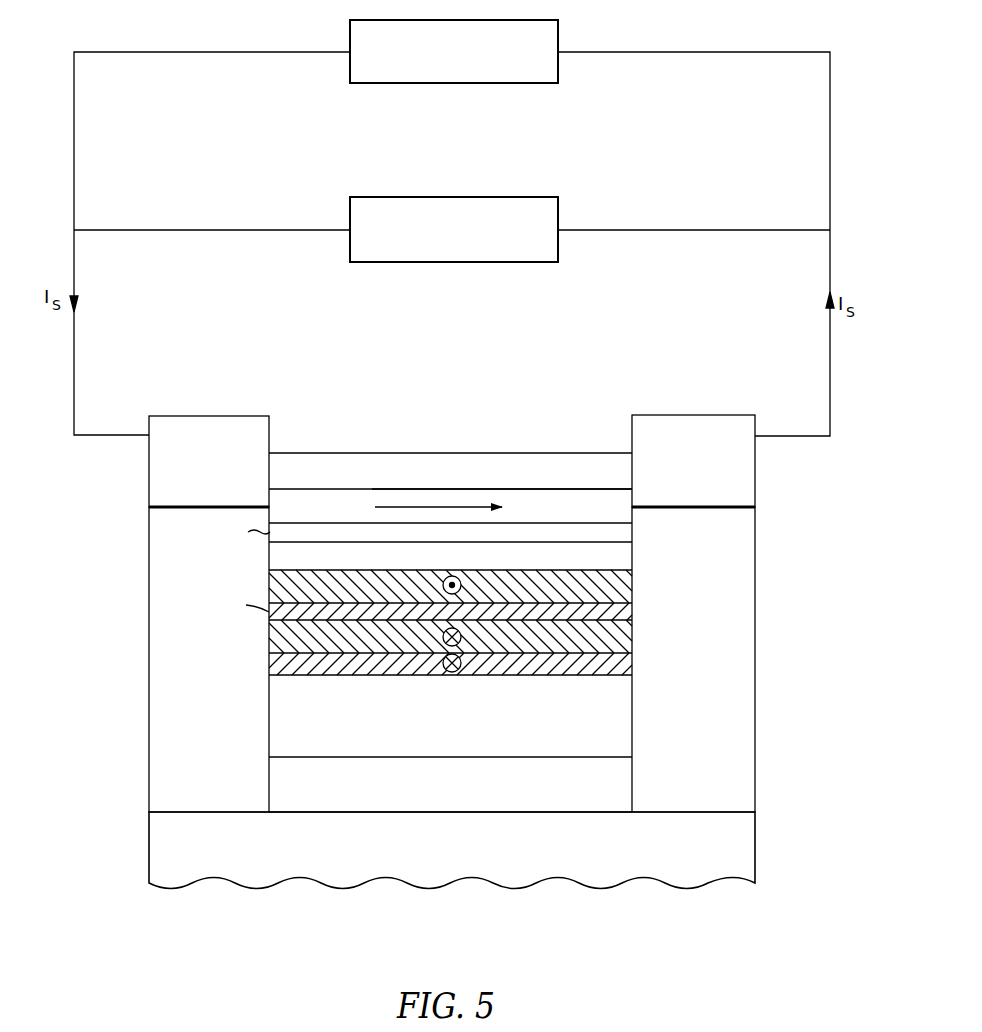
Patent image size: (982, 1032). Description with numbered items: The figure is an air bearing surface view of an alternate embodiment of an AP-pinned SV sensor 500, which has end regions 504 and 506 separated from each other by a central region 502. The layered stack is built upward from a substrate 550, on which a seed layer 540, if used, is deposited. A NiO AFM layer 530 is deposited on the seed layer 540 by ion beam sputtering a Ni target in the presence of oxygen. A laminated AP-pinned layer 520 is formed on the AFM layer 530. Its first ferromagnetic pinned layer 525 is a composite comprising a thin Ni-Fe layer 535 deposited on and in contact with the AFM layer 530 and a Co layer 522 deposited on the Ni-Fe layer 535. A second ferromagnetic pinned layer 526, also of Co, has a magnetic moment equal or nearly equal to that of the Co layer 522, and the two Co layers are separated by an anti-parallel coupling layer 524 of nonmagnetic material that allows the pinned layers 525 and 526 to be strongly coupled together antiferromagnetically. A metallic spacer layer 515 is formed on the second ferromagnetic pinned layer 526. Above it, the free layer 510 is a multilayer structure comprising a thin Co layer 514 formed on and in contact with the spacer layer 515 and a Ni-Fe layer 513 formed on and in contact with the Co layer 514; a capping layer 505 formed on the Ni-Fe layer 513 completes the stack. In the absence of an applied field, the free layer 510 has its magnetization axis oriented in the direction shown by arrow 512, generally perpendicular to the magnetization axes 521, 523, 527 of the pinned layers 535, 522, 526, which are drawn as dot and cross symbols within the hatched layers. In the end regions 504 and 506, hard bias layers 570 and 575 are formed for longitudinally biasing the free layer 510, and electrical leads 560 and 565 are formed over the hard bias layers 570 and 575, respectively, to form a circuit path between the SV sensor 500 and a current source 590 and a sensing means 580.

The AP-pinned SV sensor 500 is at (624, 940).
The central region 502 is at (630, 405).
The end region 504 is at (268, 405).
The capping layer 505 is at (626, 470).
The end region 506 is at (754, 405).
The free layer 510 is at (640, 488).
The arrow 512 is at (435, 507).
The Ni-Fe layer 513 is at (560, 498).
The Co layer 514 is at (626, 527).
The spacer layer 515 is at (626, 557).
The AP-pinned layer 520 is at (269, 570).
The magnetization axis 521 is at (460, 665).
The Co layer 522 is at (626, 638).
The magnetization axis 523 is at (445, 642).
The anti-parallel coupling layer 524 is at (626, 612).
The first ferromagnetic pinned layer 525 is at (269, 620).
The second ferromagnetic pinned layer 526 is at (626, 583).
The magnetization axis 527 is at (452, 576).
The AFM layer 530 is at (626, 732).
The Ni-Fe layer 535 is at (626, 665).
The seed layer 540 is at (626, 790).
The substrate 550 is at (750, 866).
The electrical lead 560 is at (152, 470).
The electrical lead 565 is at (750, 463).
The hard bias layer 570 is at (152, 775).
The hard bias layer 575 is at (750, 772).
The sensing means 580 is at (546, 85).
The current source 590 is at (546, 264).